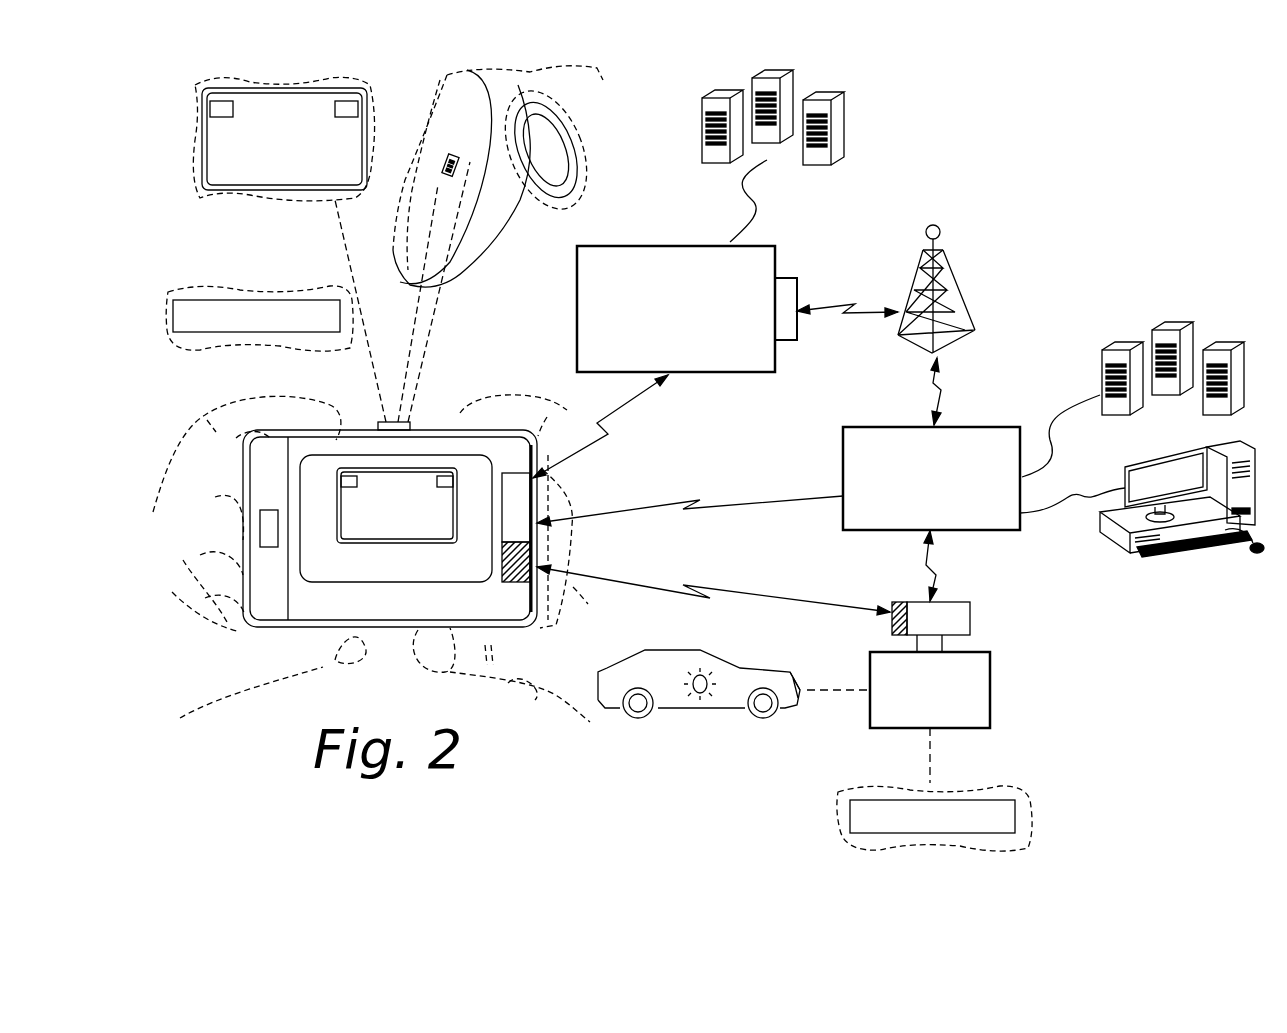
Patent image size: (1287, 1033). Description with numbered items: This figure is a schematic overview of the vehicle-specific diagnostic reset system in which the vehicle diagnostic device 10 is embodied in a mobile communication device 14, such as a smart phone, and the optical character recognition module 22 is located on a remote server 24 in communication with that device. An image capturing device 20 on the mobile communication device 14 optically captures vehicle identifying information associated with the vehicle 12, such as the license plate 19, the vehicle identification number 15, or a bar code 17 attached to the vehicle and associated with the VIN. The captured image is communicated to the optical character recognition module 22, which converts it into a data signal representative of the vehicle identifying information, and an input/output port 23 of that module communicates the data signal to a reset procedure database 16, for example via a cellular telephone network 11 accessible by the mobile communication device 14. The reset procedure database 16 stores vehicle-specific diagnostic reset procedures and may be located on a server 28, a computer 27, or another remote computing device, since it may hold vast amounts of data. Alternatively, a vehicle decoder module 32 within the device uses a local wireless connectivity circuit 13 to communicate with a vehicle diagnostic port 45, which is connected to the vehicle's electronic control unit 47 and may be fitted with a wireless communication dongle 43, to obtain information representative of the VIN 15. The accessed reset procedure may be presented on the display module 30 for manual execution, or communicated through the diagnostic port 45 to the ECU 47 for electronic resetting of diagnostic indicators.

The vehicle diagnostic device 10 is at (130, 436).
The cellular telephone network 11 is at (918, 277).
The vehicle 12 is at (458, 115).
The local wireless connectivity circuit 13 is at (520, 503).
The mobile communication device 14 is at (350, 412).
The vehicle identification number (VIN) 15 is at (248, 300).
The reset procedure database 16 is at (976, 427).
The bar code 17 is at (446, 159).
The license plate 19 is at (276, 94).
The image capturing device 20 is at (410, 428).
The optical character recognition module 22 is at (621, 246).
The input/output port 23 is at (798, 322).
The remote server 24 is at (875, 126).
The computer 27 is at (1205, 583).
The server 28 is at (1115, 316).
The display module 30 is at (345, 585).
The vehicle decoder module 32 is at (515, 588).
The wireless communication dongle 43 is at (891, 626).
The vehicle diagnostic port 45 is at (971, 617).
The electronic control unit (ECU) 47 is at (990, 690).